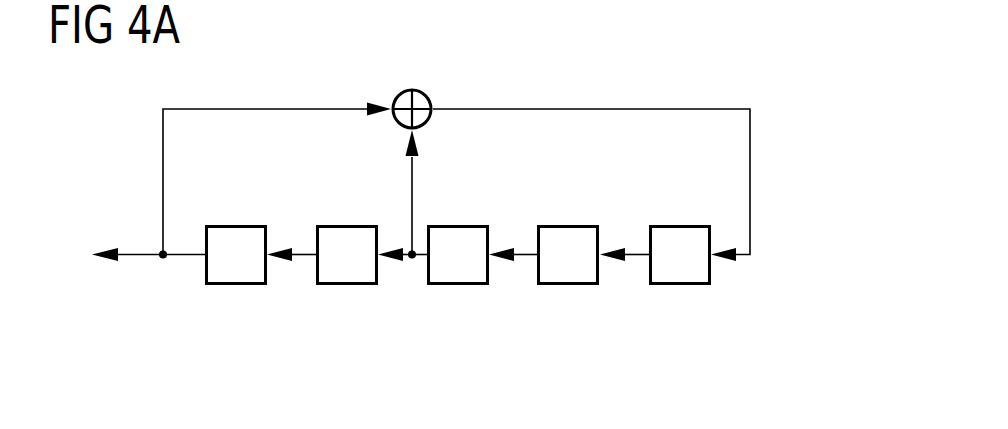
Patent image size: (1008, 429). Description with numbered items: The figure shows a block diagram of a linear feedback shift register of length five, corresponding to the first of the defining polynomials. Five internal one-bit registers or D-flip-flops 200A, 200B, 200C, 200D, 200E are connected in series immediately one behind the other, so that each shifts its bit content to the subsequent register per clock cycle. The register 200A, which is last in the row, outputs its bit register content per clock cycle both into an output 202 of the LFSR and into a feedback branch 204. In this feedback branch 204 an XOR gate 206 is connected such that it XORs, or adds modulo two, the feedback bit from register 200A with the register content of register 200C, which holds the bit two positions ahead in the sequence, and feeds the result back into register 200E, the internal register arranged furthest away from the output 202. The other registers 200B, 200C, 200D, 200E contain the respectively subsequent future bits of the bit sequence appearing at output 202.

The internal register 200A is at (232, 286).
The internal register 200B is at (345, 286).
The internal register 200C is at (457, 286).
The internal register 200D is at (568, 286).
The internal register 200E is at (680, 286).
The output 202 is at (138, 254).
The feedback branch 204 is at (821, 132).
The XOR gate 206 is at (426, 92).